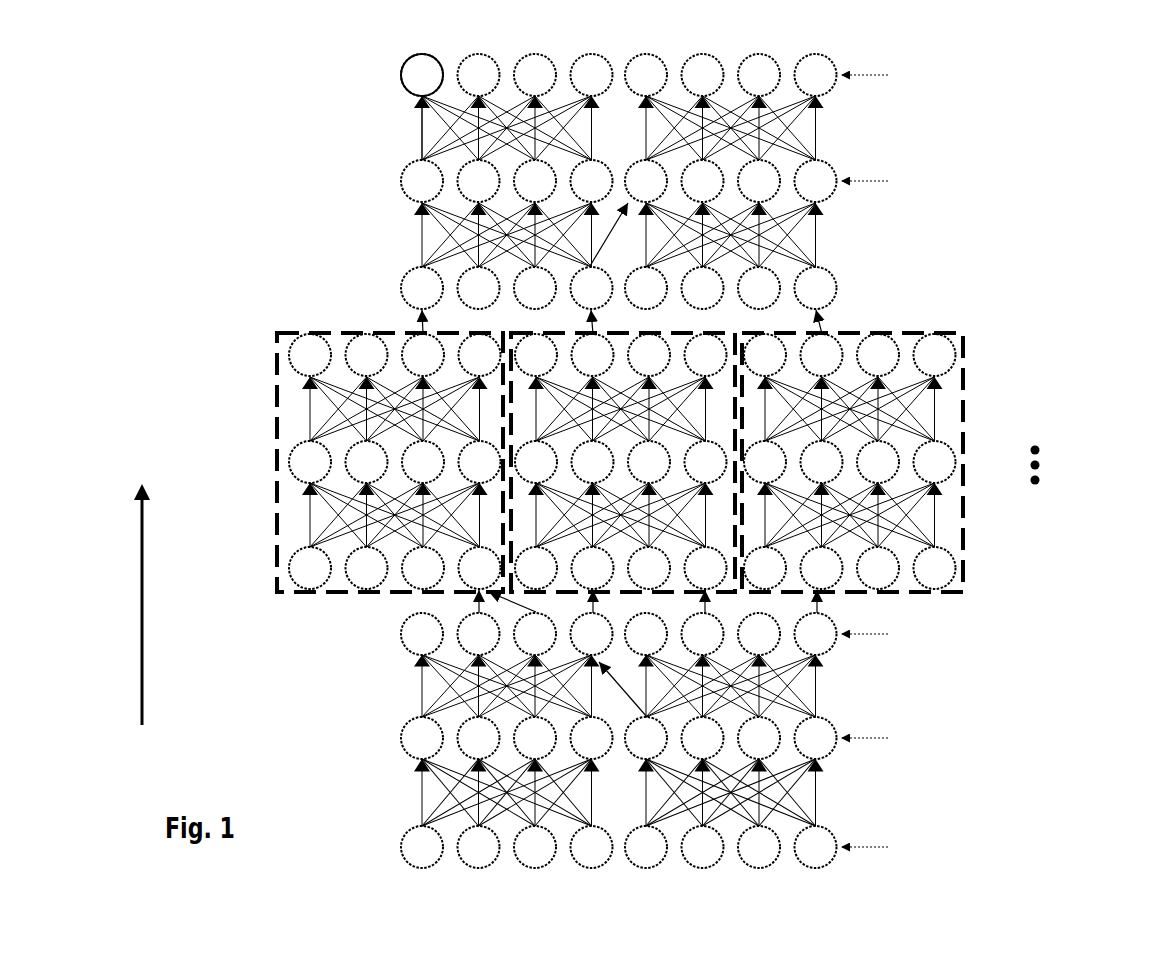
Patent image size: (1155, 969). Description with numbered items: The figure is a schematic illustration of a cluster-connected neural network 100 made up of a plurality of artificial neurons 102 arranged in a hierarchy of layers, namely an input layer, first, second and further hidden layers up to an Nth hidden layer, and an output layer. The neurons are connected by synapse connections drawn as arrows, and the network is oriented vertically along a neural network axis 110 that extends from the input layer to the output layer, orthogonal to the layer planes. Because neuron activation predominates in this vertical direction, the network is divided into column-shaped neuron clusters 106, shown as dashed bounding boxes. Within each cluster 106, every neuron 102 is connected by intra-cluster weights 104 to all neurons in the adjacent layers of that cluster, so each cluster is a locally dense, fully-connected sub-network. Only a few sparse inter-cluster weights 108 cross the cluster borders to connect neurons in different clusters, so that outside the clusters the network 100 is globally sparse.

The cluster-connected neural network 100 is at (271, 110).
The artificial neuron 102 is at (398, 76).
The intra-cluster weight 104 is at (418, 134).
The neuron cluster 106 is at (275, 333).
The inter-cluster weight 108 is at (611, 238).
The neural network axis 110 is at (147, 622).